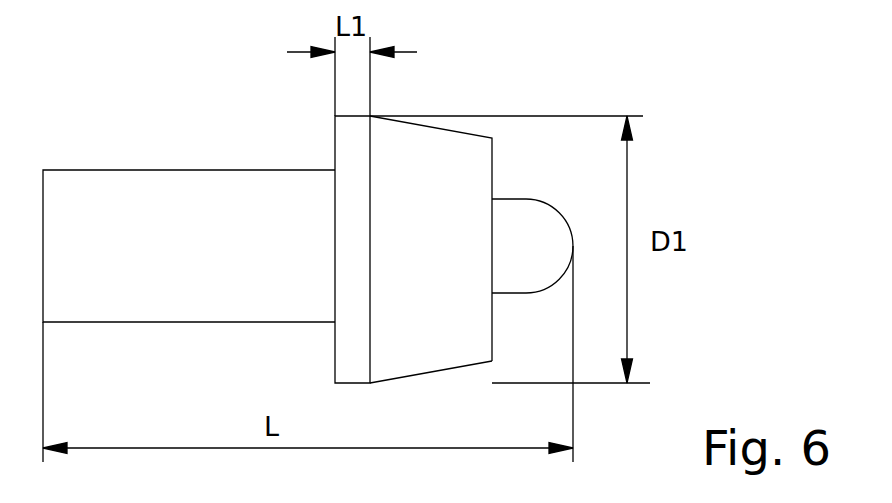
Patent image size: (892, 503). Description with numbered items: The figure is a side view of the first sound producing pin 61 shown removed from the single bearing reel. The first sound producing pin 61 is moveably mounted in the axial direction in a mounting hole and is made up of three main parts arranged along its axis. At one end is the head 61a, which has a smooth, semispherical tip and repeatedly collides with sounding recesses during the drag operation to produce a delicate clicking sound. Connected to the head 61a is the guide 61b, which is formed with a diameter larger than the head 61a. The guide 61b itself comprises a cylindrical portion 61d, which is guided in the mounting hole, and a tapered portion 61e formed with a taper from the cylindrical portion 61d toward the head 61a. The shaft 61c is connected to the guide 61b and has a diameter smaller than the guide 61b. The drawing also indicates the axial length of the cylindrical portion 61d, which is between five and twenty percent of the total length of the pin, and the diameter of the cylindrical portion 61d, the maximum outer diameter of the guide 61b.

The first sound producing pin 61 is at (453, 88).
The head 61a is at (518, 229).
The guide 61b is at (470, 126).
The shaft 61c is at (182, 192).
The cylindrical portion 61d is at (353, 347).
The tapered portion 61e is at (450, 347).